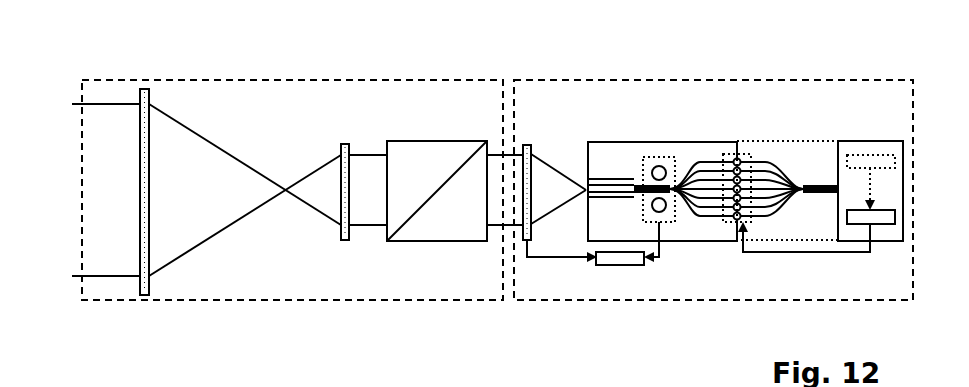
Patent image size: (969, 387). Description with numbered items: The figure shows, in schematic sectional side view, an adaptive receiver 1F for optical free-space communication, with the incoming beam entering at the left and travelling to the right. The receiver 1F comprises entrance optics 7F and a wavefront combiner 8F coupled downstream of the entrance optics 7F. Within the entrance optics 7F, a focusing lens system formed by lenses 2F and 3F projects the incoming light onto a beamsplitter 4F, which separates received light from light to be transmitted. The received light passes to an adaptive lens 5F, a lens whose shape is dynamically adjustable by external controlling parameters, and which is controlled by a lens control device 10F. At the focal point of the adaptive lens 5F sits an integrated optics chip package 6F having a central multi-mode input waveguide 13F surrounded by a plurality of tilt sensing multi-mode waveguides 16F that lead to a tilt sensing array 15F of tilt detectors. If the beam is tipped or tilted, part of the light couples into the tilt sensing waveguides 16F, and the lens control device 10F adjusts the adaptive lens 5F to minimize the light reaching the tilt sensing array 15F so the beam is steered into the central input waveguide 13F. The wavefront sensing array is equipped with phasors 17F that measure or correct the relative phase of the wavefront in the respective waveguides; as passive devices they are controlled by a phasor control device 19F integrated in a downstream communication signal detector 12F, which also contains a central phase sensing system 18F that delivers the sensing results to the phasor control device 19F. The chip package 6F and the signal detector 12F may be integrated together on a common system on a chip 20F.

The adaptive receiver 1F is at (106, 52).
The lens 2F is at (143, 89).
The lens 3F is at (347, 144).
The beamsplitter 4F is at (432, 148).
The adaptive lens 5F is at (528, 144).
The integrated optics chip package 6F is at (596, 142).
The entrance optics 7F is at (82, 193).
The wavefront combiner 8F is at (535, 300).
The lens control device 10F is at (618, 265).
The communication signal detector 12F is at (890, 241).
The central multi-mode input waveguide 13F is at (607, 186).
The tilt sensing array 15F is at (673, 157).
The tilt sensing multi-mode waveguides 16F is at (590, 182).
The phasors 17F is at (748, 154).
The central phase sensing system 18F is at (866, 155).
The phasor control device 19F is at (857, 225).
The system on a chip 20F is at (810, 141).